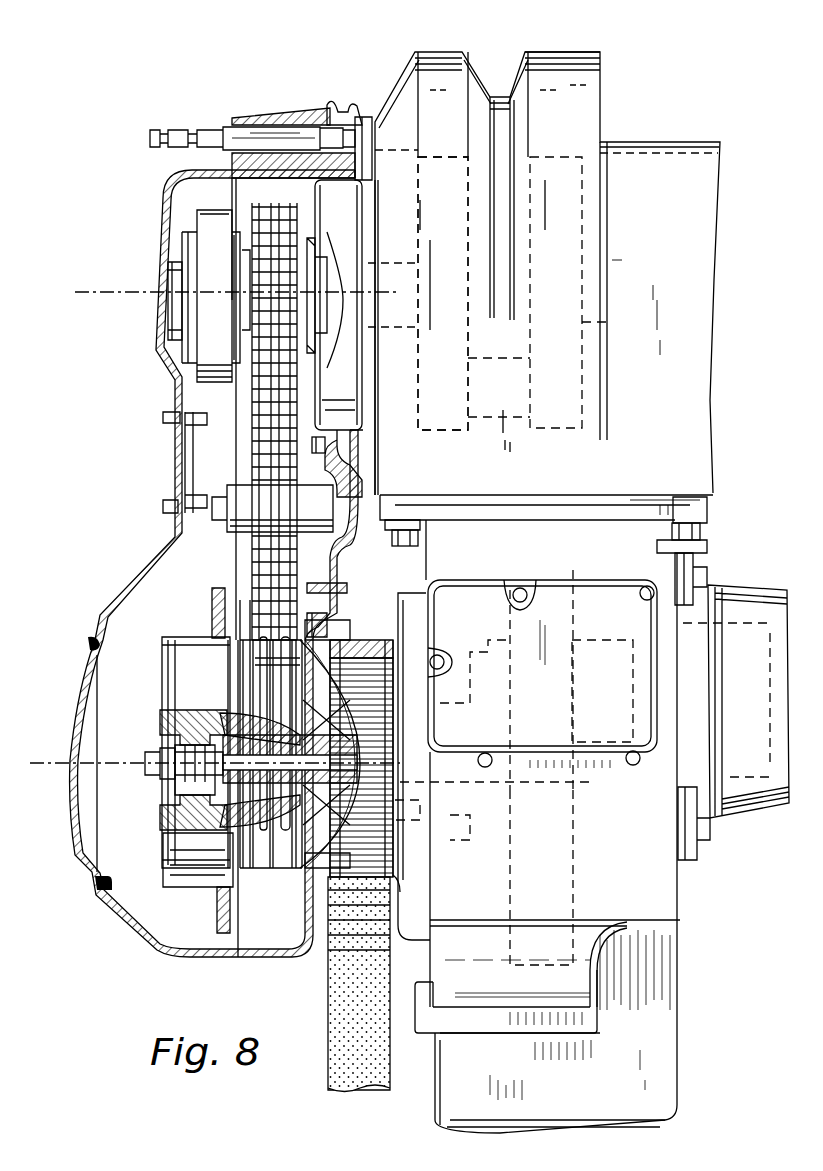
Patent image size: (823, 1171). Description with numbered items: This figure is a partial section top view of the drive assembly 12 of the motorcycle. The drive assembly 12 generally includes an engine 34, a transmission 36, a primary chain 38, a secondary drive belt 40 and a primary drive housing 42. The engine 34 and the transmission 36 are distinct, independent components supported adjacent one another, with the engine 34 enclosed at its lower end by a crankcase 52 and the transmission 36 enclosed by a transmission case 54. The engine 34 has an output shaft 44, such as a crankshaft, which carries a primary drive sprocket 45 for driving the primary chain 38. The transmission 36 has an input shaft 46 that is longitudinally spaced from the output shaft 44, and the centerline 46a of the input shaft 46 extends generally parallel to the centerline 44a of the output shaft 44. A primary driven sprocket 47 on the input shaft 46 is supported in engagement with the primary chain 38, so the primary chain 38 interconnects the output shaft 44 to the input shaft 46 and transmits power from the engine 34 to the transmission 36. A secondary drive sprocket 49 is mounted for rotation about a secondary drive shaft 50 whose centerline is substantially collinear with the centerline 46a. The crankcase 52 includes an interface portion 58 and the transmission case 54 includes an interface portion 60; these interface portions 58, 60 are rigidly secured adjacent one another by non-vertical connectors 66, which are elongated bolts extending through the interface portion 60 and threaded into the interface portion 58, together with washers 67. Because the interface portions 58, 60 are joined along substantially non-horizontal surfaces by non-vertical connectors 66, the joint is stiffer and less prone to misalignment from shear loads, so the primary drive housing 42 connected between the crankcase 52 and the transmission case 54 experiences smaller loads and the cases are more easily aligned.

The drive assembly 12 is at (106, 447).
The engine 34 is at (733, 307).
The transmission 36 is at (797, 590).
The primary chain 38 is at (258, 425).
The secondary drive belt 40 is at (346, 985).
The primary drive housing 42 is at (148, 580).
The output shaft 44 is at (413, 313).
The centerline of the output shaft 44a is at (105, 292).
The primary drive sprocket 45 is at (240, 323).
The input shaft 46 is at (226, 803).
The centerline of the input shaft 46a is at (55, 763).
The primary driven sprocket 47 is at (263, 688).
The secondary drive sprocket 49 is at (397, 880).
The secondary drive shaft 50 is at (462, 738).
The crankcase 52 is at (580, 62).
The transmission case 54 is at (652, 883).
The interface portion 58 is at (640, 500).
The interface portion 60 is at (665, 555).
The connectors 66 is at (410, 545).
The washers 67 is at (395, 518).